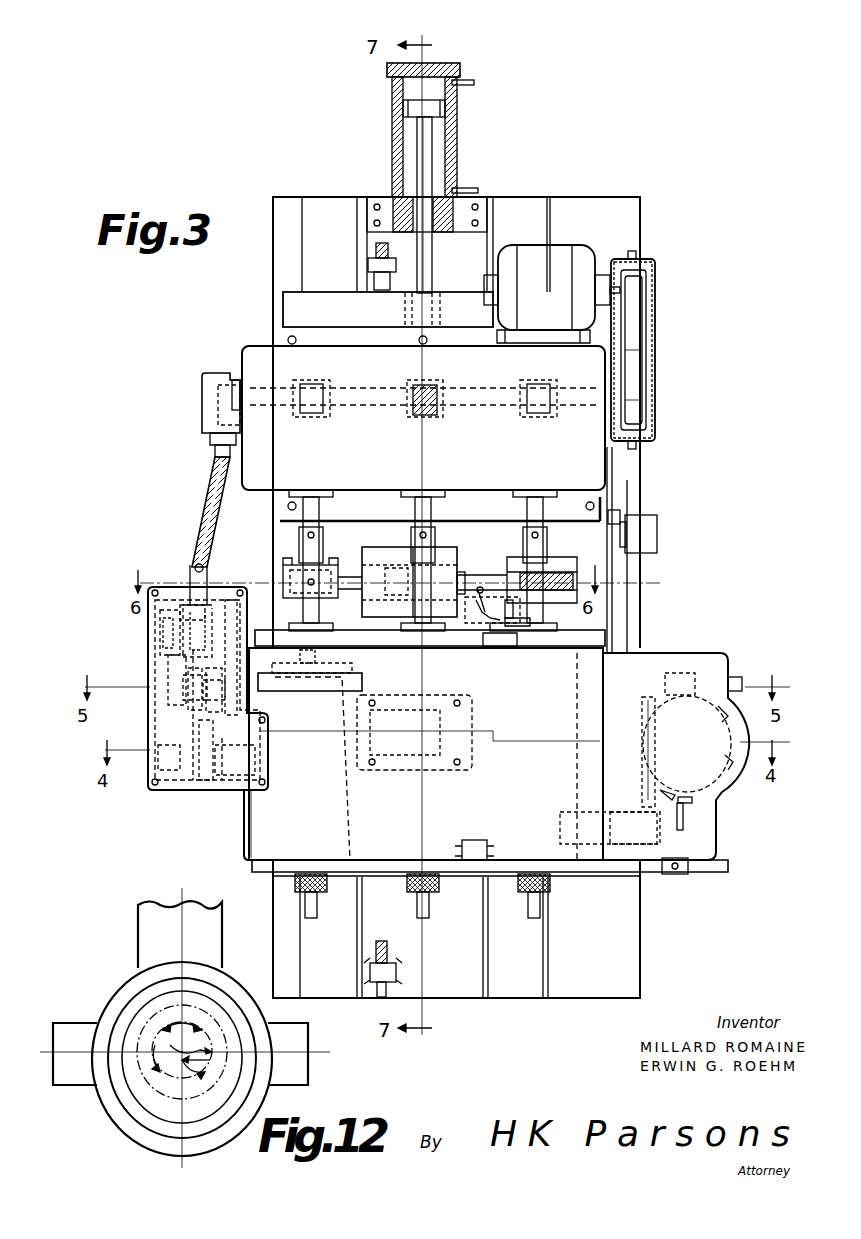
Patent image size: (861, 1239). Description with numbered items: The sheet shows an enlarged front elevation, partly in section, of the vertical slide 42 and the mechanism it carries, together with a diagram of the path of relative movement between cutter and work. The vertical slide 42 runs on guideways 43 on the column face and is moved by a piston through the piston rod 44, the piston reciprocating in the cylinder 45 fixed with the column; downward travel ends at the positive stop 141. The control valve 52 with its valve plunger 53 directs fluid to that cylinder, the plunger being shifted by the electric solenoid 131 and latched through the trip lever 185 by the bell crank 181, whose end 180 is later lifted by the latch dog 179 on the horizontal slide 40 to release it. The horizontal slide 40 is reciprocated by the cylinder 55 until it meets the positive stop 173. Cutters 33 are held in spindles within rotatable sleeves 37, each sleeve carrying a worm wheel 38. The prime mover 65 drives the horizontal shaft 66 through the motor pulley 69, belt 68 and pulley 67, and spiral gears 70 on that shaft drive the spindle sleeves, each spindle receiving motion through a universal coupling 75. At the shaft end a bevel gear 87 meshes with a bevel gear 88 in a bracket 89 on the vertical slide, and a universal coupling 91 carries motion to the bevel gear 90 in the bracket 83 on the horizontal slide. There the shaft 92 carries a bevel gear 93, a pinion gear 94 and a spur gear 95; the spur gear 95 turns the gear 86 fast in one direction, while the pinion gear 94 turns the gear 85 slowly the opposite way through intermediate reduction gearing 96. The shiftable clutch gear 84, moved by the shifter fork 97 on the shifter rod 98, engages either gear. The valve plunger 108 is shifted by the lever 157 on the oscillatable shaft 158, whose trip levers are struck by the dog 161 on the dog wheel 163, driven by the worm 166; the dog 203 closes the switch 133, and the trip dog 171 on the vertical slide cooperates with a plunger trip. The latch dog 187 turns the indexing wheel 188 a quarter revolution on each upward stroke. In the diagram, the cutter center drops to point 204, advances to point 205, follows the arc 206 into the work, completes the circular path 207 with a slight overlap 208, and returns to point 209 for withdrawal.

In FIG. 3, the cutter 33 is at (528, 912).
In FIG. 3, the rotatable sleeve 37 is at (350, 828).
In FIG. 3, the worm wheel 38 is at (356, 683).
In FIG. 3, the horizontal slide 40 is at (258, 838).
In FIG. 3, the vertical slide 42 is at (300, 309).
In FIG. 3, the guideways 43 is at (402, 108).
In FIG. 3, the piston rod 44 is at (418, 142).
In FIG. 3, the cylinder 45 is at (389, 84).
In FIG. 3, the control valve 52 is at (400, 562).
In FIG. 3, the valve plunger 53 is at (486, 566).
In FIG. 3, the cylinder 55 is at (437, 766).
In FIG. 3, the prime mover 65 is at (565, 258).
In FIG. 3, the horizontal shaft 66 is at (574, 408).
In FIG. 3, the pulley 67 is at (653, 415).
In FIG. 3, the belt 68 is at (636, 338).
In FIG. 3, the motor pulley 69 is at (656, 300).
In FIG. 3, the spiral gears 70 is at (530, 386).
In FIG. 3, the universal coupling 75 is at (432, 553).
In FIG. 3, the bracket 83 is at (150, 657).
In FIG. 3, the shiftable clutch gear 84 is at (200, 716).
In FIG. 3, the gear 85 is at (190, 705).
In FIG. 3, the gear 86 is at (226, 772).
In FIG. 3, the bevel gear 87 is at (236, 381).
In FIG. 3, the bevel gear 88 is at (215, 405).
In FIG. 3, the bracket 89 is at (207, 426).
In FIG. 3, the bevel gear 90 is at (185, 594).
In FIG. 3, the universal coupling 91 is at (214, 478).
In FIG. 3, the shaft 92 is at (215, 595).
In FIG. 3, the bevel gear 93 is at (175, 612).
In FIG. 3, the pinion gear 94 is at (161, 645).
In FIG. 3, the spur gear 95 is at (232, 598).
In FIG. 3, the intermediate reduction gearing 96 is at (165, 673).
In FIG. 3, the shifter fork 97 is at (200, 790).
In FIG. 3, the shifter rod 98 is at (190, 785).
In FIG. 3, the valve plunger 108 is at (688, 836).
In FIG. 3, the electric solenoid 131 is at (326, 600).
In FIG. 3, the switch 133 is at (730, 716).
In FIG. 3, the positive stop 141 is at (398, 970).
In FIG. 3, the lever 157 is at (684, 818).
In FIG. 3, the oscillatable shaft 158 is at (692, 802).
In FIG. 3, the dog 161 is at (672, 788).
In FIG. 3, the dog wheel 163 is at (734, 790).
In FIG. 3, the worm 166 is at (690, 673).
In FIG. 3, the trip dog 171 is at (681, 878).
In FIG. 3, the positive stop 173 is at (480, 842).
In FIG. 3, the latch dog 179 is at (492, 648).
In FIG. 3, the bell crank end 180 is at (516, 632).
In FIG. 3, the bell crank 181 is at (476, 616).
In FIG. 3, the trip lever 185 is at (492, 605).
In FIG. 3, the latch dog 187 is at (610, 524).
In FIG. 3, the indexing wheel 188 is at (624, 545).
In FIG. 3, the dog 203 is at (731, 760).
In FIG. 12, the point 204 is at (170, 1040).
In FIG. 12, the point 205 is at (205, 1040).
In FIG. 12, the arc 206 is at (213, 1050).
In FIG. 12, the circular path 207 is at (190, 1080).
In FIG. 12, the overlap 208 is at (211, 1060).
In FIG. 12, the point 209 is at (175, 1076).